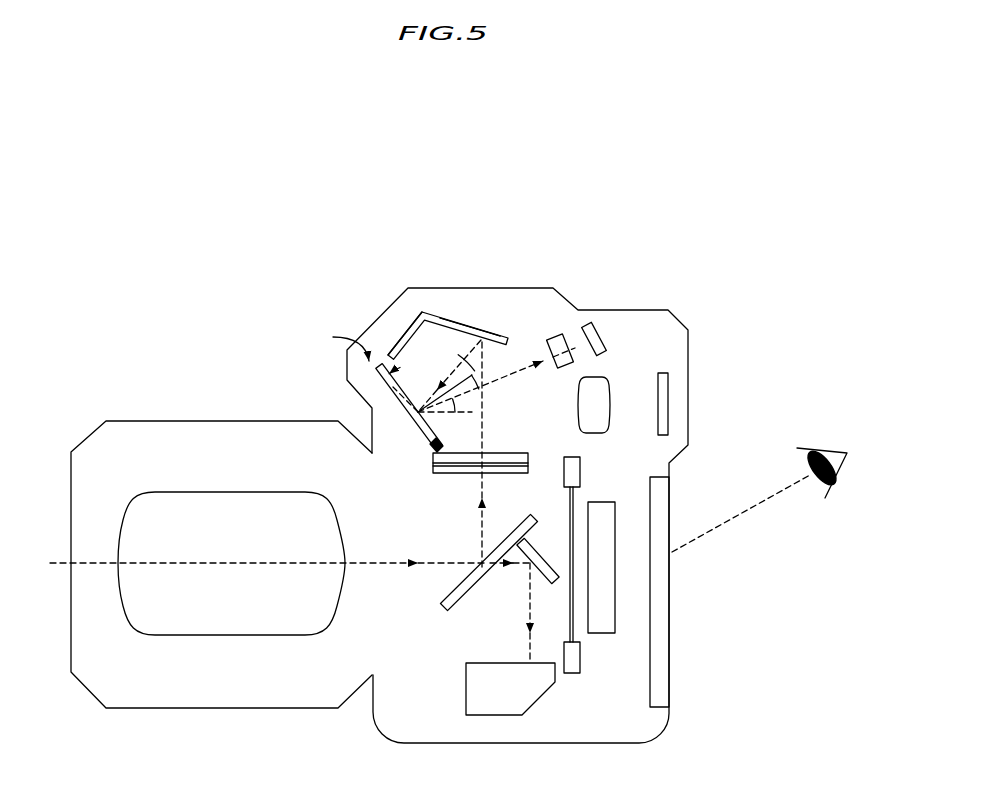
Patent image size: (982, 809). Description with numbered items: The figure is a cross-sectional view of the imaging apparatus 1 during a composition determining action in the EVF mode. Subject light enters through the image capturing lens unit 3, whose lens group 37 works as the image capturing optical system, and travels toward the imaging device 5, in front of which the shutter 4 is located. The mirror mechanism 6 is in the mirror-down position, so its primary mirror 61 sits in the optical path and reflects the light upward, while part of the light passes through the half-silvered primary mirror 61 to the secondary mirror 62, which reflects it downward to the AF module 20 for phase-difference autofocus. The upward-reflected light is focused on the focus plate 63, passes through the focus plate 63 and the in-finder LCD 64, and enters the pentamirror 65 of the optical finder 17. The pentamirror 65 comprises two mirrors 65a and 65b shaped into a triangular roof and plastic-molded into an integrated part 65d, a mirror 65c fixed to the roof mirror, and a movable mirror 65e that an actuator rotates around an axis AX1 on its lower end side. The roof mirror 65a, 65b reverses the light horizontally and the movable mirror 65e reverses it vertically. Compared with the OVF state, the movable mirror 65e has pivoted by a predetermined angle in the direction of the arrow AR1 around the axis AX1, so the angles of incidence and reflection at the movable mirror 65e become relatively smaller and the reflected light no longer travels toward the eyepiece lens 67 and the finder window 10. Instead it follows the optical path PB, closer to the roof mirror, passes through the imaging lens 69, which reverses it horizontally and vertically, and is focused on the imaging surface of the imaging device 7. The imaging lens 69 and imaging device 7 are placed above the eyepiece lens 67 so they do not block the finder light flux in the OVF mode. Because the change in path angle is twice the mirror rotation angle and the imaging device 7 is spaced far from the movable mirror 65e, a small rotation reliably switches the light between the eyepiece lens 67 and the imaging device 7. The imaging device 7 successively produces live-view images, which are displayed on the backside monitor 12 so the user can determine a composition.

The imaging apparatus 1 is at (170, 201).
The image capturing lens unit 3 is at (216, 712).
The shutter 4 is at (570, 674).
The imaging device 5 is at (603, 500).
The mirror mechanism 6 is at (476, 582).
The primary mirror 61 is at (442, 604).
The secondary mirror 62 is at (543, 556).
The focus plate 63 is at (450, 475).
The in-finder LCD 64 is at (510, 453).
The pentamirror 65 is at (408, 318).
The mirror 65a is at (472, 326).
The mirror 65b is at (477, 275).
The mirror 65c is at (400, 336).
The integrated part 65d is at (453, 320).
The movable mirror 65e is at (397, 408).
The eyepiece lens 67 is at (611, 383).
The imaging lens 69 is at (550, 340).
The imaging device 7 is at (606, 350).
The finder window 10 is at (670, 383).
The backside monitor 12 is at (671, 590).
The optical finder 17 is at (408, 318).
The AF module 20 is at (492, 716).
The lens group 37 is at (233, 490).
The optical path PB is at (581, 346).
The arrow AR1 is at (329, 343).
The axis AX1 is at (432, 451).